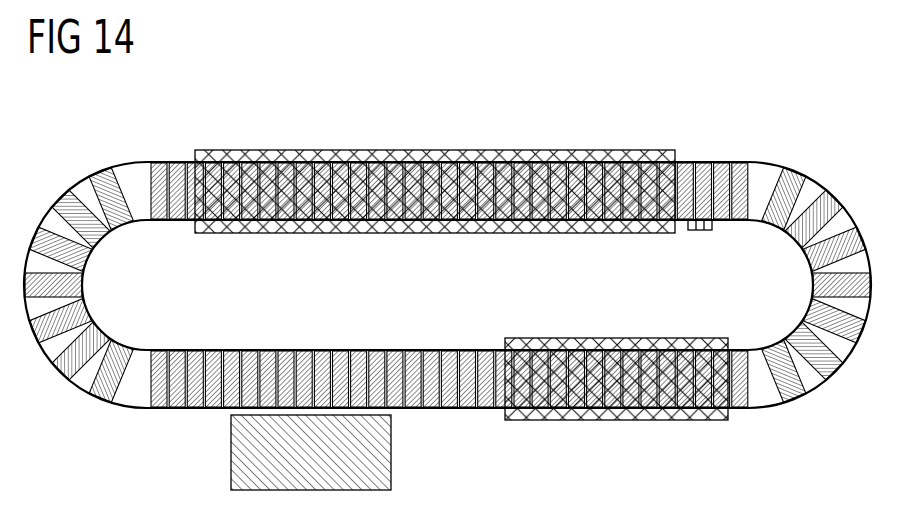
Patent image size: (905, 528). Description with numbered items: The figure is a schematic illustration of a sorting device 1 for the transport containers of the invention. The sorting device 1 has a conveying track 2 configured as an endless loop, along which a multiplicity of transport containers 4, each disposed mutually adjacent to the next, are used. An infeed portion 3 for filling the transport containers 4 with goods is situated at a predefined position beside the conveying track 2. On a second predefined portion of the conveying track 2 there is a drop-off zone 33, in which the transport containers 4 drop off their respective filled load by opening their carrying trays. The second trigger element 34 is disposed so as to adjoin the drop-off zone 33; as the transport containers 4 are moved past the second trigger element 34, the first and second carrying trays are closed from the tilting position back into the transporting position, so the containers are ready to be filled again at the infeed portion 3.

The sorting device 1 is at (354, 126).
The conveying track 2 is at (452, 150).
The infeed portion 3 is at (391, 445).
The transport container 4 is at (160, 163).
The drop-off zone 33 is at (594, 136).
The second trigger element 34 is at (694, 238).